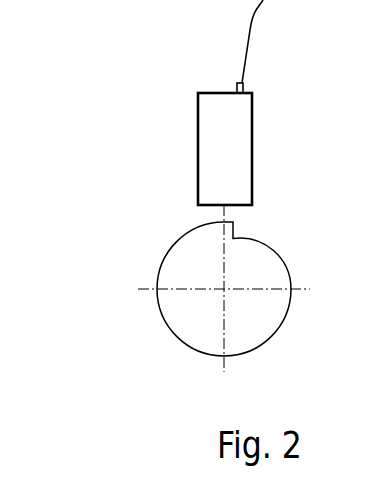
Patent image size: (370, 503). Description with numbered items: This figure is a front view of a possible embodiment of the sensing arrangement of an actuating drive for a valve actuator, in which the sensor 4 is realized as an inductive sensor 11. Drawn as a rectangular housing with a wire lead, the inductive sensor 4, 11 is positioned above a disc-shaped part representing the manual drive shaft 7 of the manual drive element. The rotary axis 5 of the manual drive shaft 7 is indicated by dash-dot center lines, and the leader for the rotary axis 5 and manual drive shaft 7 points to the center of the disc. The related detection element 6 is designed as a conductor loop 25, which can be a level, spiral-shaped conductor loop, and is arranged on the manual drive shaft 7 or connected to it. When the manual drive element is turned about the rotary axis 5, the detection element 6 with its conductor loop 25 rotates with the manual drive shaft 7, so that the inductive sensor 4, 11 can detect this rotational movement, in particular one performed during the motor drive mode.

The sensor 4 is at (175, 102).
The inductive sensor 11 is at (207, 127).
The rotary axis 5 is at (161, 288).
The manual drive shaft 7 is at (224, 289).
The detection element 6 is at (173, 290).
The conductor loop 25 is at (185, 331).